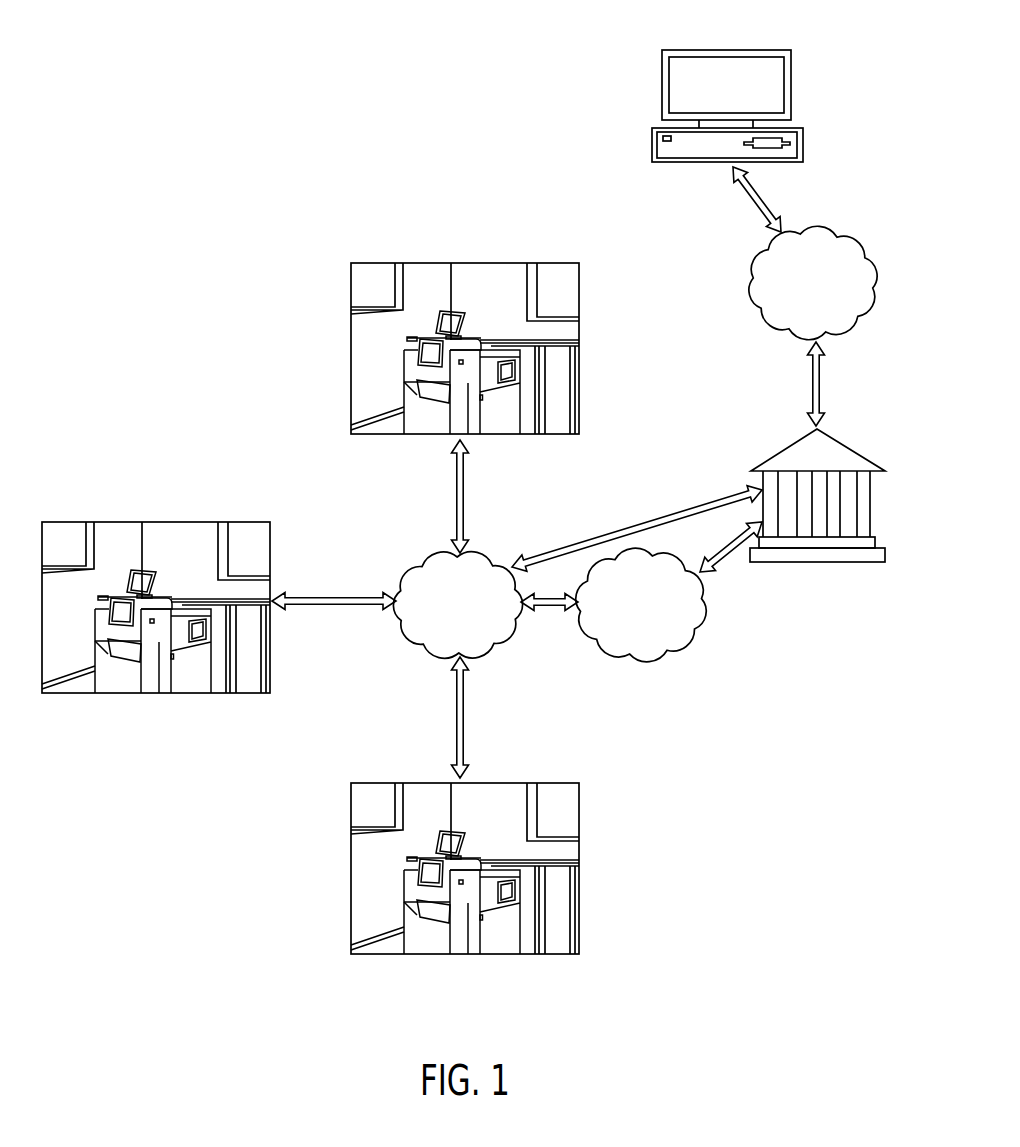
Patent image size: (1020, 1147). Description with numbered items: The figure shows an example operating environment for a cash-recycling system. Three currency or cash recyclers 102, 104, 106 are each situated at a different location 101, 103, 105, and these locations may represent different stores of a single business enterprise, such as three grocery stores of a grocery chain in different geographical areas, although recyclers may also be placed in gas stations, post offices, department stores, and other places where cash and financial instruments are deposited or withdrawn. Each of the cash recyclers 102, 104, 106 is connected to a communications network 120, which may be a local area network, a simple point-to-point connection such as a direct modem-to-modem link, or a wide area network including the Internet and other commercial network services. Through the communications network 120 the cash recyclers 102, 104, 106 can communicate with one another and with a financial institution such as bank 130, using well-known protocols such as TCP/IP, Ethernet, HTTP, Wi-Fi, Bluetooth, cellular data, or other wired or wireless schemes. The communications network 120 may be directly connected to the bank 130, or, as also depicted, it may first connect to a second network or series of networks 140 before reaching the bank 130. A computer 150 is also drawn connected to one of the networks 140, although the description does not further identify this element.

The location 101 is at (478, 273).
The cash recycler 102 is at (426, 420).
The location 103 is at (172, 530).
The cash recycler 104 is at (113, 679).
The location 105 is at (360, 857).
The cash recycler 106 is at (428, 944).
The communications network 120 is at (493, 640).
The bank 130 is at (790, 447).
The second network or series of networks 140 is at (752, 277).
The computer 150 is at (758, 50).